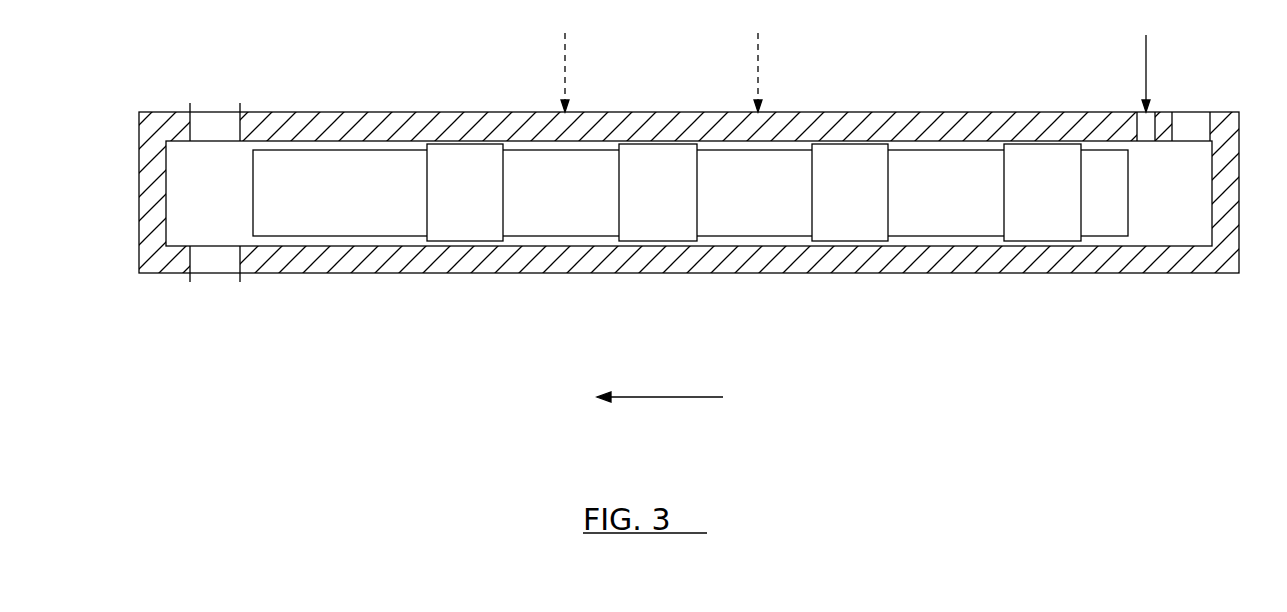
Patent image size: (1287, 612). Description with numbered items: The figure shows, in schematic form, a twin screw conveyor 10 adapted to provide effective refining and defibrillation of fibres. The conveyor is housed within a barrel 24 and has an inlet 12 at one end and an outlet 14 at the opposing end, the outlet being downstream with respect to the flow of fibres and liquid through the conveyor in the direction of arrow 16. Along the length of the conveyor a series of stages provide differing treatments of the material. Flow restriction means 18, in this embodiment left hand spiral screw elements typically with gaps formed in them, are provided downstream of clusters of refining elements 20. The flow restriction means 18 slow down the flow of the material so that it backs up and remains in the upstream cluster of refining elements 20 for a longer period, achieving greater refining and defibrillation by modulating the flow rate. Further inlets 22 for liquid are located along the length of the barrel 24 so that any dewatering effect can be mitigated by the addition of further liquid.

The twin screw conveyor 10 is at (555, 220).
The inlet 12 is at (1195, 122).
The outlet 14 is at (227, 120).
The arrow 16 is at (648, 397).
The flow restriction means 18 is at (463, 165).
The refining elements 20 is at (360, 167).
The further inlets 22 is at (564, 72).
The barrel 24 is at (630, 273).